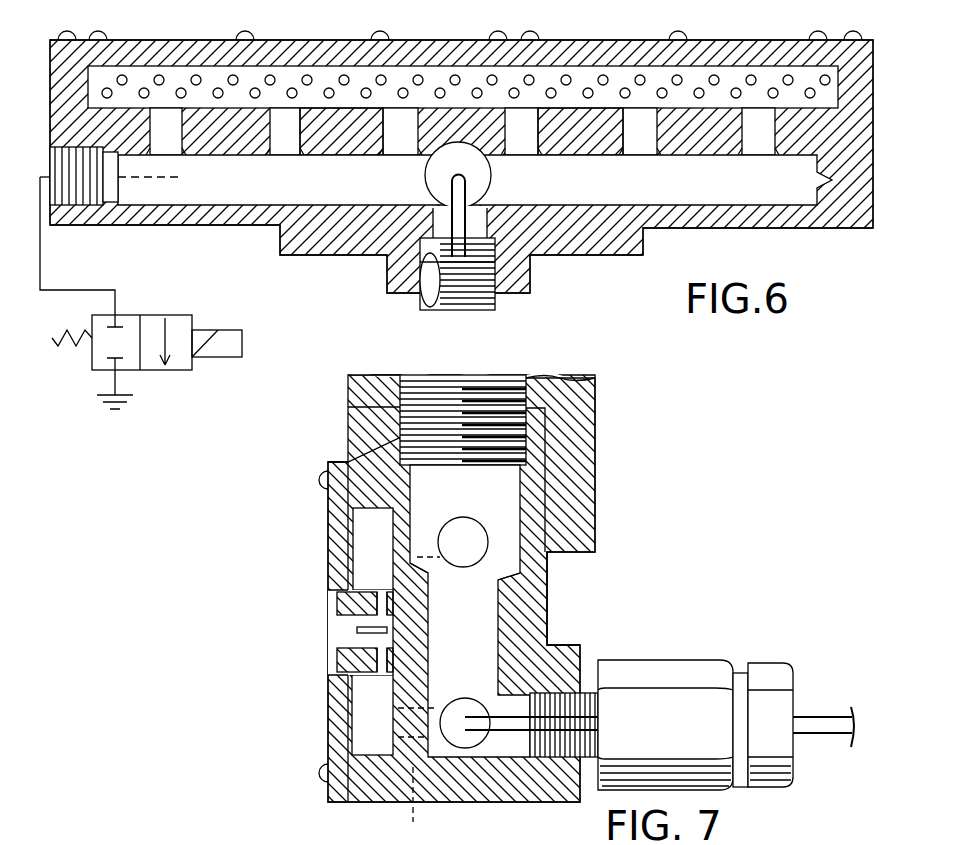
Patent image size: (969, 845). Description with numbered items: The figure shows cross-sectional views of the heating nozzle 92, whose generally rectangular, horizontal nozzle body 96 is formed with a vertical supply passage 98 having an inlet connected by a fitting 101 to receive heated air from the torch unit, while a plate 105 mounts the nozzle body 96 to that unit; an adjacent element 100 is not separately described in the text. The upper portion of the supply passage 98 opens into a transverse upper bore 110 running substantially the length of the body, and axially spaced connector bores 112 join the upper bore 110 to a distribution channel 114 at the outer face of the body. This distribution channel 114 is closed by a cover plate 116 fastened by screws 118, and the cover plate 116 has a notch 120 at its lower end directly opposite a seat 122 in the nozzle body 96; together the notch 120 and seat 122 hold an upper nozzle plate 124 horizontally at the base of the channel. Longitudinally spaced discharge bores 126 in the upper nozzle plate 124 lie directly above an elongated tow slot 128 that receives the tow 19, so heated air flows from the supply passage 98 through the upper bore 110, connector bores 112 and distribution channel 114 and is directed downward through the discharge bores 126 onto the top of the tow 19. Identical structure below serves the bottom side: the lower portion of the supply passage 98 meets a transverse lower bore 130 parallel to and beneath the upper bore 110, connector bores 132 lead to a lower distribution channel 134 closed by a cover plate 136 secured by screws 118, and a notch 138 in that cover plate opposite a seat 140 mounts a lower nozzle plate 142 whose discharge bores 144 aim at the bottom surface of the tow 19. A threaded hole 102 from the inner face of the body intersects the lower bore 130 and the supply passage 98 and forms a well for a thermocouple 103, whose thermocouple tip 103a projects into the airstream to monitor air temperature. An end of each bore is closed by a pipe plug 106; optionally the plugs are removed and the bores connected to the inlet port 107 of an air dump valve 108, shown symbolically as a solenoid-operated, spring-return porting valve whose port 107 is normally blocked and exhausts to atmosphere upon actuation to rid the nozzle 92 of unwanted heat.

In FIG. 7, the tow 19 is at (356, 630).
In FIG. 6, the nozzle 92 is at (328, 276).
In FIG. 7, the nozzle 92 is at (650, 602).
In FIG. 6, the nozzle body 96 is at (600, 256).
In FIG. 7, the nozzle body 96 is at (549, 641).
In FIG. 6, the supply passage 98 is at (426, 178).
In FIG. 7, the supply passage 98 is at (549, 593).
In FIG. 7, the cap 100 is at (543, 441).
In FIG. 7, the fitting 101 is at (480, 408).
In FIG. 6, the threaded hole 102 is at (424, 302).
In FIG. 7, the threaded hole 102 is at (585, 660).
In FIG. 6, the thermocouple 103 is at (496, 303).
In FIG. 7, the thermocouple 103 is at (667, 734).
In FIG. 6, the thermocouple tip 103a is at (470, 181).
In FIG. 7, the thermocouple tip 103a is at (497, 770).
In FIG. 7, the plate 105 is at (577, 398).
In FIG. 6, the pipe plug 106 is at (80, 220).
In FIG. 6, the inlet port 107 is at (118, 312).
In FIG. 6, the air dump valve 108 is at (172, 370).
In FIG. 7, the upper bore 110 is at (471, 531).
In FIG. 7, the connector bores 112 is at (425, 525).
In FIG. 7, the distribution channel 114 is at (360, 520).
In FIG. 7, the cover plate 116 is at (330, 563).
In FIG. 6, the screws 118 is at (267, 8).
In FIG. 7, the screws 118 is at (321, 480).
In FIG. 7, the notch 120 is at (338, 601).
In FIG. 7, the seat 122 is at (427, 577).
In FIG. 7, the upper nozzle plate 124 is at (388, 622).
In FIG. 7, the discharge bores 126 is at (377, 592).
In FIG. 7, the tow slot 128 is at (400, 645).
In FIG. 6, the lower bore 130 is at (240, 194).
In FIG. 7, the lower bore 130 is at (470, 768).
In FIG. 6, the connector bores 132 is at (636, 140).
In FIG. 7, the connector bores 132 is at (411, 806).
In FIG. 6, the lower distribution channel 134 is at (340, 108).
In FIG. 7, the lower distribution channel 134 is at (362, 723).
In FIG. 6, the cover plate 136 is at (617, 38).
In FIG. 7, the cover plate 136 is at (338, 752).
In FIG. 7, the notch 138 is at (337, 667).
In FIG. 7, the seat 140 is at (400, 675).
In FIG. 6, the lower nozzle plate 142 is at (583, 125).
In FIG. 7, the lower nozzle plate 142 is at (340, 655).
In FIG. 6, the discharge bores 144 is at (506, 98).
In FIG. 7, the discharge bores 144 is at (376, 692).